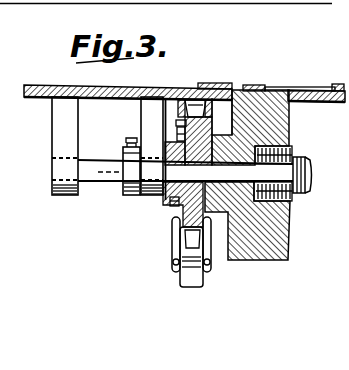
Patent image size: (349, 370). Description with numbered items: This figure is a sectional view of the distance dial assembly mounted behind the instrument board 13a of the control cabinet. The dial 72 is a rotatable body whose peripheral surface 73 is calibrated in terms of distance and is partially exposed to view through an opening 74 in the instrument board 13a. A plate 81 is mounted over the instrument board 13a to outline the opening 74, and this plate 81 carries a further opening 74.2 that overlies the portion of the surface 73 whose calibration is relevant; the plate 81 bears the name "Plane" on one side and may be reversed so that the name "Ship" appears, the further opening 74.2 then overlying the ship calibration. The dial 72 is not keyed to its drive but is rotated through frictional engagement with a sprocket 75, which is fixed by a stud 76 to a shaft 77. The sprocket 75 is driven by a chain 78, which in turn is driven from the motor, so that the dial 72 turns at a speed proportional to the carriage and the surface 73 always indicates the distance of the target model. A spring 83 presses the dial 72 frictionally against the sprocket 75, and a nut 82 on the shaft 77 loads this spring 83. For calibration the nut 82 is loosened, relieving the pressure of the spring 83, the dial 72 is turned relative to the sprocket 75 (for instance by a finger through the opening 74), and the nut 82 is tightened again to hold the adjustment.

The instrument board 13a is at (145, 86).
The opening 74 is at (213, 84).
The peripheral surface 73 is at (248, 86).
The further opening 74.2 is at (283, 88).
The plate 81 is at (320, 91).
The dial 72 is at (291, 122).
The spring 83 is at (284, 148).
The nut 82 is at (306, 163).
The stud 76 is at (164, 151).
The shaft 77 is at (95, 172).
The sprocket 75 is at (177, 210).
The chain 78 is at (175, 242).